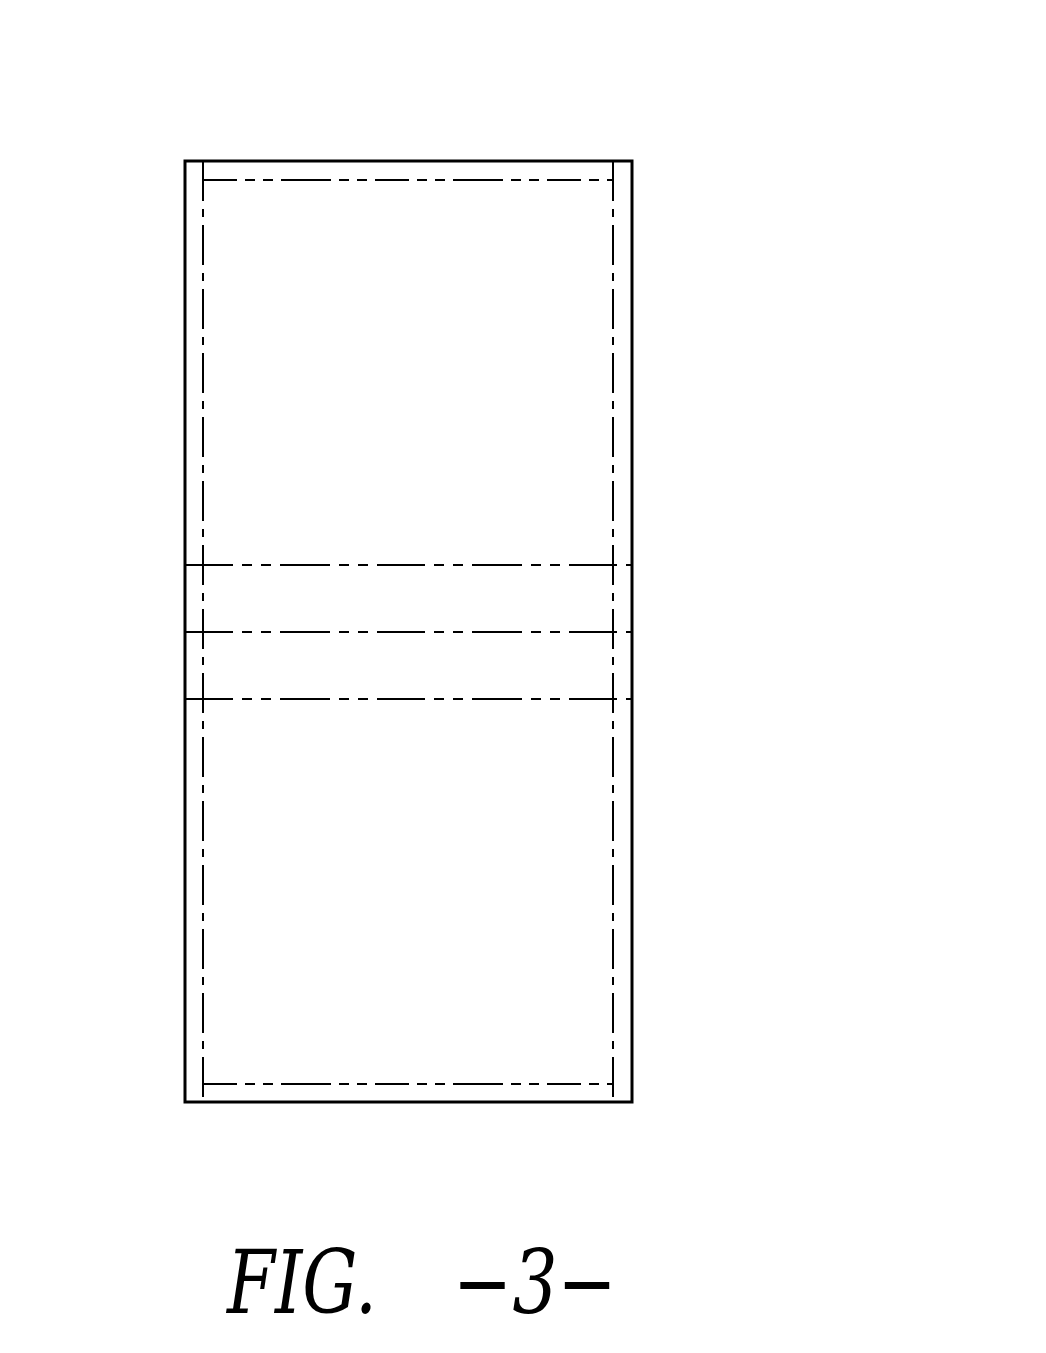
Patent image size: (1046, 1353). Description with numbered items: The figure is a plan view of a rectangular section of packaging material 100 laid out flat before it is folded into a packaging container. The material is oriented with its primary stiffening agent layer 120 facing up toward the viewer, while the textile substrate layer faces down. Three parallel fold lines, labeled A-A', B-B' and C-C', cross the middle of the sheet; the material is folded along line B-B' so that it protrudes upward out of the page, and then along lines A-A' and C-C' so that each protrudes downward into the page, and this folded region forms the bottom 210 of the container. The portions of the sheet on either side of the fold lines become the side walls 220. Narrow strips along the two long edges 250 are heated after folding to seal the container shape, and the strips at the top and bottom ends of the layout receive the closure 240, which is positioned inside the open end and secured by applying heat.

The packaging material 100 is at (467, 590).
The primary stiffening agent layer 120 is at (235, 235).
The bottom 210 is at (733, 562).
The side walls 220 is at (570, 342).
The closure 240 is at (460, 170).
The edges 250 is at (197, 362).